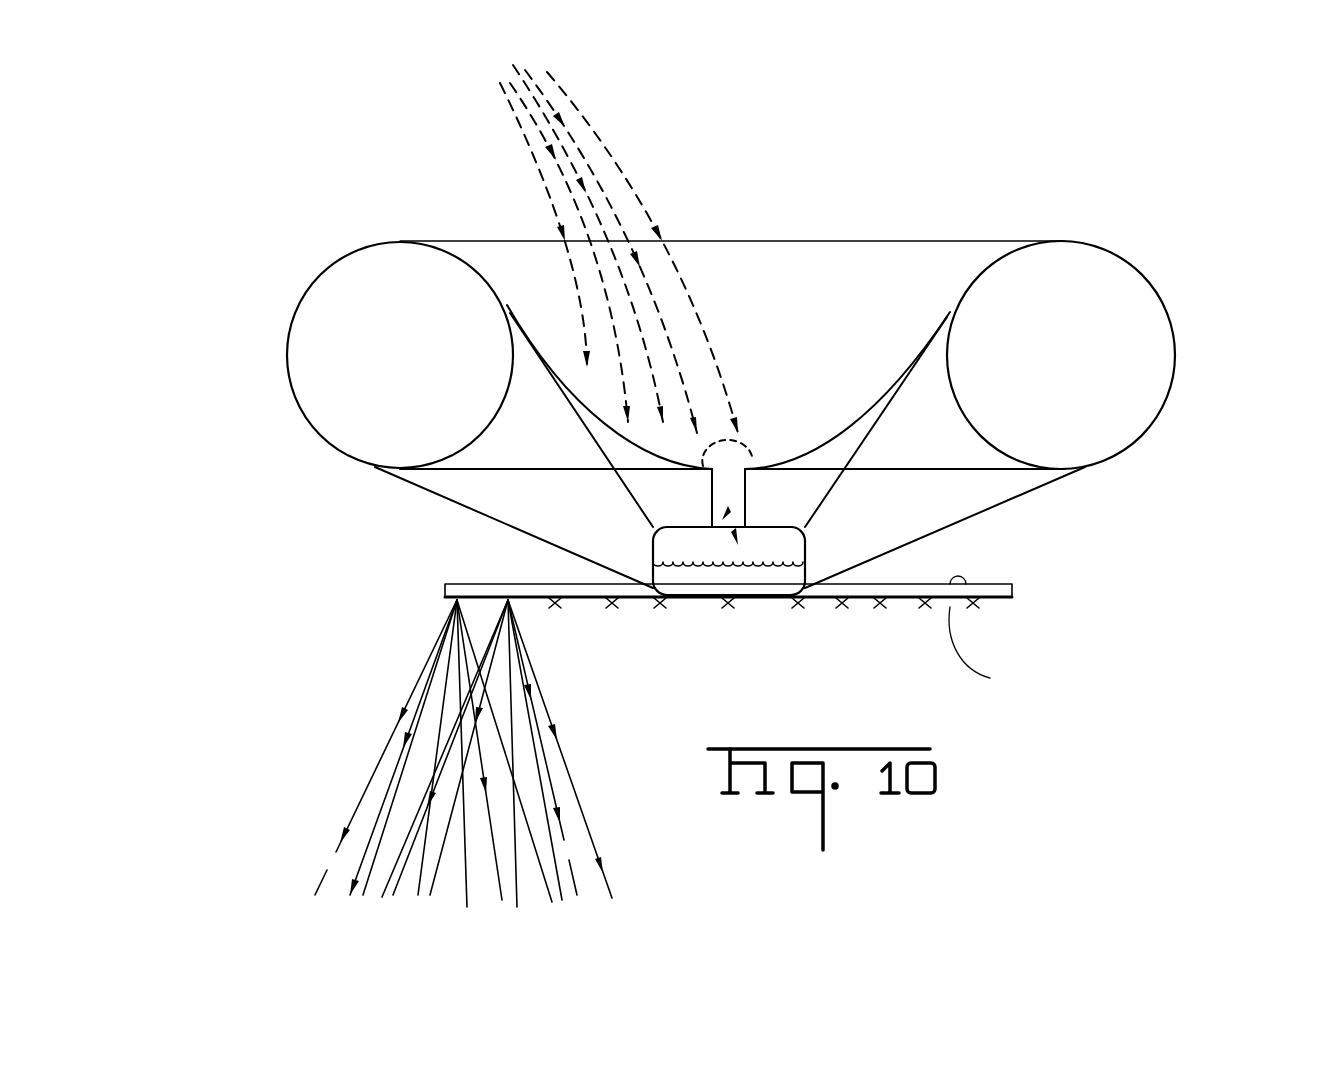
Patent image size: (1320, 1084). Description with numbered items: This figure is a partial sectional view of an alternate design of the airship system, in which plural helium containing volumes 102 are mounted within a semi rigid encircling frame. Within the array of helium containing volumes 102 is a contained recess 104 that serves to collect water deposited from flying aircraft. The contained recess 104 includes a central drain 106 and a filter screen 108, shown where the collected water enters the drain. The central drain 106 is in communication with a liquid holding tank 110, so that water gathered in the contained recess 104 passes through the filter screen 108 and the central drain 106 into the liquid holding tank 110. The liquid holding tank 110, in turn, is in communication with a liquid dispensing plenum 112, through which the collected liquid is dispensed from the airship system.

The helium containing volumes 102 is at (310, 294).
The contained recess 104 is at (897, 380).
The central drain 106 is at (755, 453).
The filter screen 108 is at (733, 448).
The liquid holding tank 110 is at (777, 523).
The liquid dispensing plenum 112 is at (702, 593).